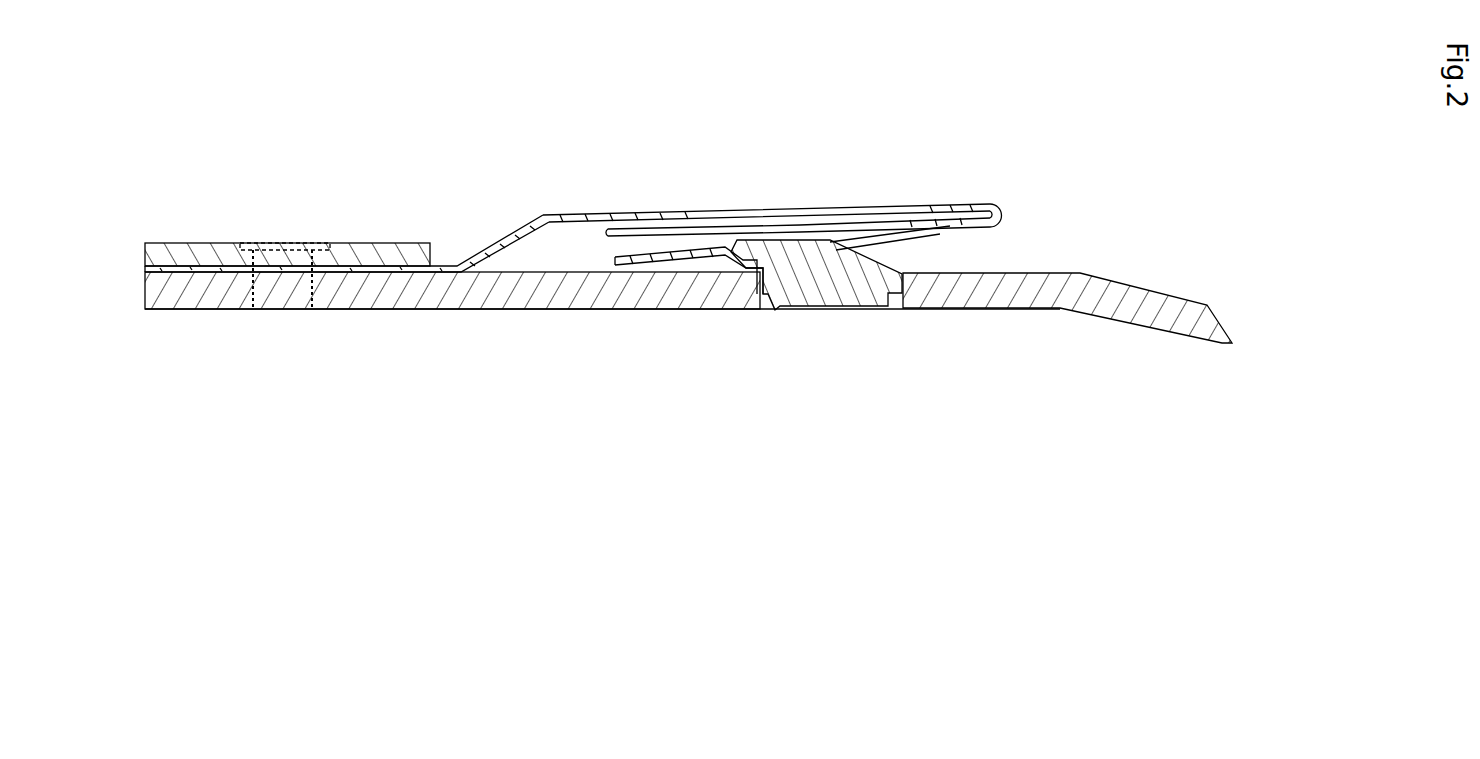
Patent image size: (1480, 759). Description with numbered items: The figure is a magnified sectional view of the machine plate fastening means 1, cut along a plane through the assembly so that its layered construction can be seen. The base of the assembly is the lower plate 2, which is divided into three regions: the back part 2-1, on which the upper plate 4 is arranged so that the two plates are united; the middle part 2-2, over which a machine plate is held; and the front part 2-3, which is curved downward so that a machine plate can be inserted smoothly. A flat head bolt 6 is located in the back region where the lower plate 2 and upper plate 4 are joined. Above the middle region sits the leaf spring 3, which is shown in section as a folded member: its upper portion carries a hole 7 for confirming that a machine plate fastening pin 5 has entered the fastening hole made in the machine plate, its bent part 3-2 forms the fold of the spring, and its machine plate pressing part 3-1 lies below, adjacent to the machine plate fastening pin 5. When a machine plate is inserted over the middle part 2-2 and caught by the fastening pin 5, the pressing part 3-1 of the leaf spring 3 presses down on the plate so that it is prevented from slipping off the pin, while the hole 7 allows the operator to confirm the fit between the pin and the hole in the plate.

The machine plate fastening means 1 is at (703, 76).
The lower plate 2 is at (1225, 322).
The back part of lower plate 2-1 is at (228, 340).
The middle part of lower plate 2-2 is at (650, 340).
The front part of lower plate 2-3 is at (1147, 325).
The leaf spring 3 is at (808, 173).
The machine plate pressing part of leaf spring 3-1 is at (612, 262).
The bent part of leaf spring 3-2 is at (635, 220).
The upper plate 4 is at (434, 247).
The machine plate fastening pin 5 is at (850, 300).
The flat head bolt 6 is at (311, 247).
The hole for confirming fit 7 is at (795, 213).